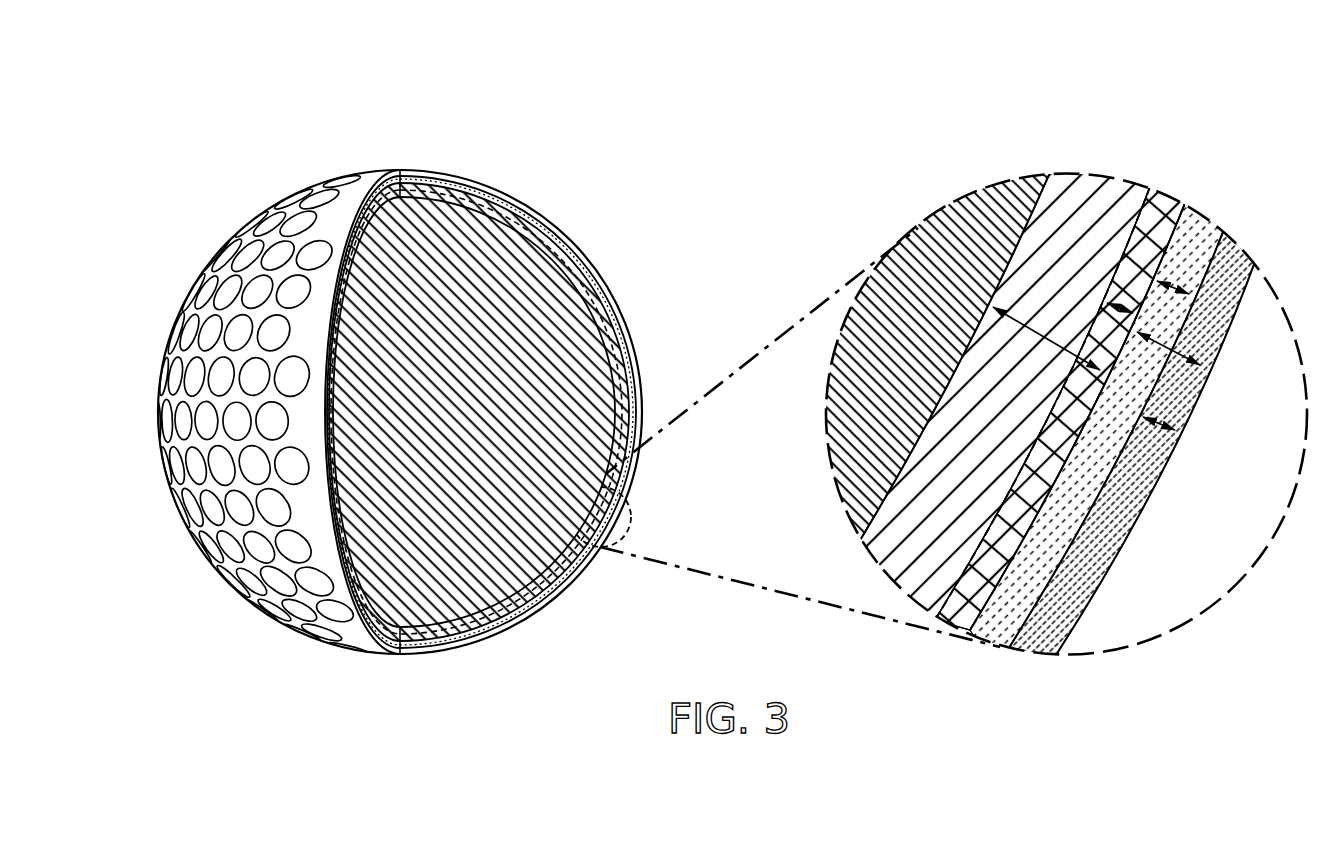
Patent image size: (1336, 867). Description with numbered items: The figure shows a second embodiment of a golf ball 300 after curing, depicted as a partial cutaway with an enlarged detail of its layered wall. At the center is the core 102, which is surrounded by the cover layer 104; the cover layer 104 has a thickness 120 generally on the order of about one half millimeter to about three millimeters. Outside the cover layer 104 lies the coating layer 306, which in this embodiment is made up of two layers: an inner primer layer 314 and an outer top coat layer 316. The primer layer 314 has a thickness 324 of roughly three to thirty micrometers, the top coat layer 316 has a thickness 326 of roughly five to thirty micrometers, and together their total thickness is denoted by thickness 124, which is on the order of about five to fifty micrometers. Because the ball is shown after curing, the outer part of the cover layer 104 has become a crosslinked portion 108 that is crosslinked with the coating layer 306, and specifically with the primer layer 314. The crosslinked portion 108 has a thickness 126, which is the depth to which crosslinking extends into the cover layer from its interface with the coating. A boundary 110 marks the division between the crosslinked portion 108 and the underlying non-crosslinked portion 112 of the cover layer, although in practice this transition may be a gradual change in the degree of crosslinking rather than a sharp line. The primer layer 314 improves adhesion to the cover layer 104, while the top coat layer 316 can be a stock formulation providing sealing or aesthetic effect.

The golf ball 300 is at (306, 116).
The core 102 is at (537, 551).
The cover layer 104 is at (507, 211).
The crosslinked portion 108 is at (965, 590).
The boundary 110 is at (978, 532).
The non-crosslinked portion 112 is at (1056, 197).
The thickness 120 is at (1048, 350).
The thickness 124 is at (1253, 258).
The thickness 126 is at (1122, 310).
The coating layer 306 is at (806, 474).
The primer layer 314 is at (990, 622).
The top coat layer 316 is at (1048, 636).
The thickness 324 is at (1172, 287).
The thickness 326 is at (1160, 420).